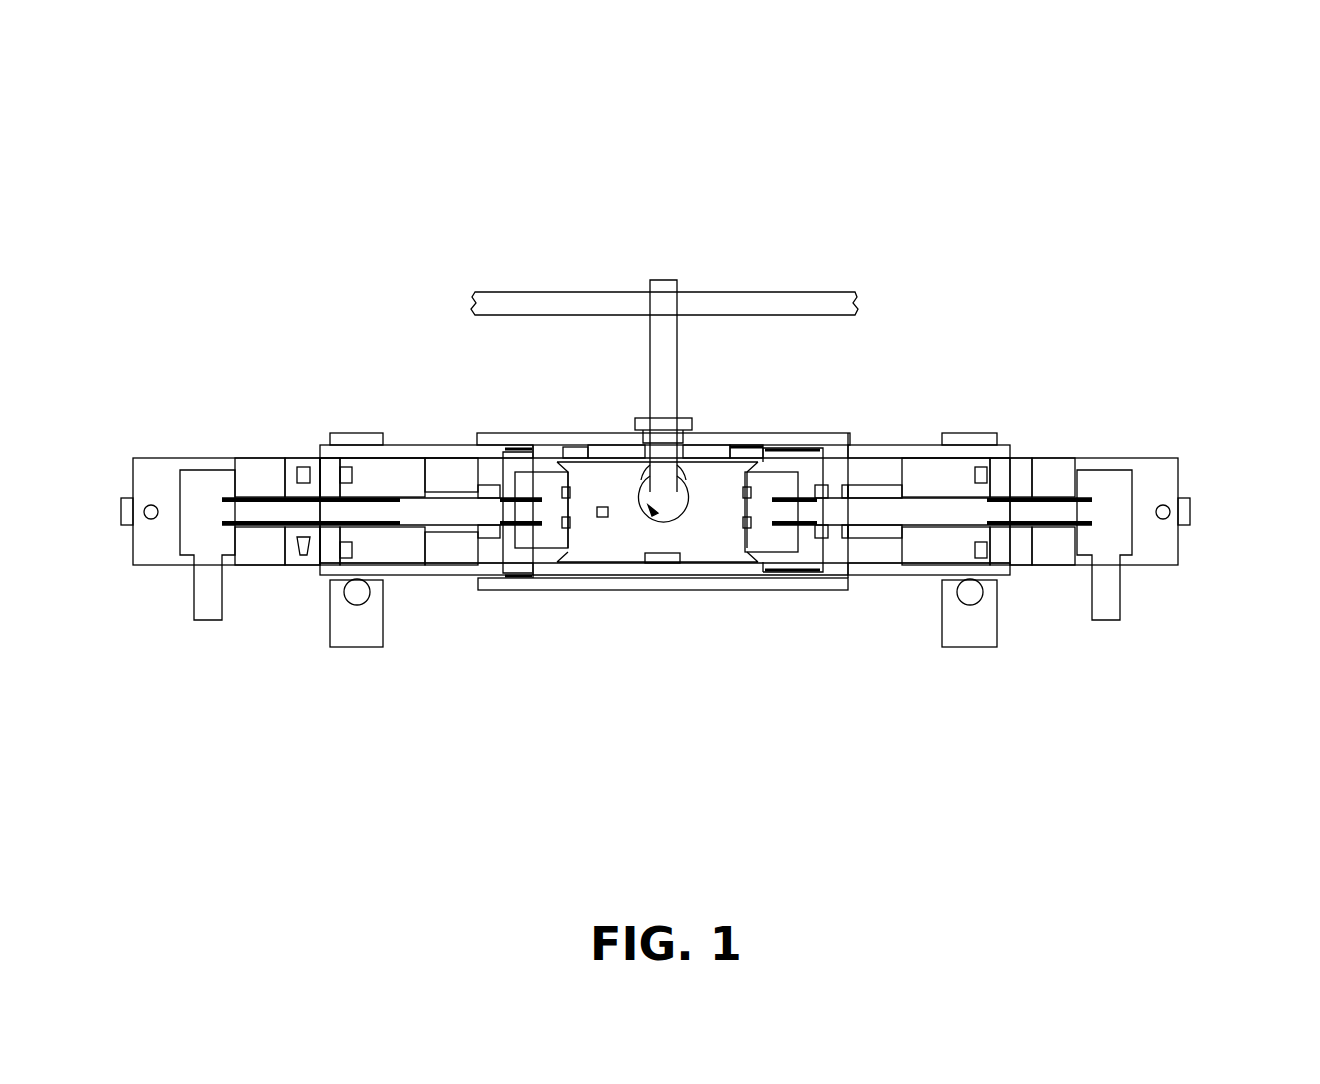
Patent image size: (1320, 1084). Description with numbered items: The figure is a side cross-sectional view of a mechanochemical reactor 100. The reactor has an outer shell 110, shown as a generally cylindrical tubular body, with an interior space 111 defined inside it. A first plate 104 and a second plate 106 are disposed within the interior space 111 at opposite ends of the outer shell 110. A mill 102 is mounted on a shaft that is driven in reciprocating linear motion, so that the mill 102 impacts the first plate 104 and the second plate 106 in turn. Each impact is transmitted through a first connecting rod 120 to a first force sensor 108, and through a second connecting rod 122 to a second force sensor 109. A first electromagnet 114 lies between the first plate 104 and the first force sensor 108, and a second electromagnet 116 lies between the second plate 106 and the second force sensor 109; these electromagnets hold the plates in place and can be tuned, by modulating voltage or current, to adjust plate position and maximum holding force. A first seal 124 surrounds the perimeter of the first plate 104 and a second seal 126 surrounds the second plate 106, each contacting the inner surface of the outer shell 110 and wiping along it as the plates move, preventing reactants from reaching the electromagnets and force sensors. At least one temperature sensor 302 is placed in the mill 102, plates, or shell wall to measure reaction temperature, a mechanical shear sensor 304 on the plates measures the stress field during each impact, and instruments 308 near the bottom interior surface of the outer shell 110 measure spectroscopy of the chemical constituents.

The mechanochemical reactor 100 is at (1243, 141).
The mill 102 is at (687, 495).
The first plate 104 is at (548, 545).
The second plate 106 is at (760, 543).
The first force sensor 108 is at (207, 487).
The second force sensor 109 is at (1105, 483).
The outer shell 110 is at (395, 452).
The interior space 111 is at (730, 507).
The first electromagnet 114 is at (397, 553).
The second electromagnet 116 is at (922, 542).
The first connecting rod 120 is at (437, 515).
The second connecting rod 122 is at (893, 503).
The first seal 124 is at (560, 557).
The second seal 126 is at (770, 465).
The temperature sensor 302 is at (647, 500).
The mechanical shear sensor 304 is at (565, 522).
The instruments 308 is at (663, 562).